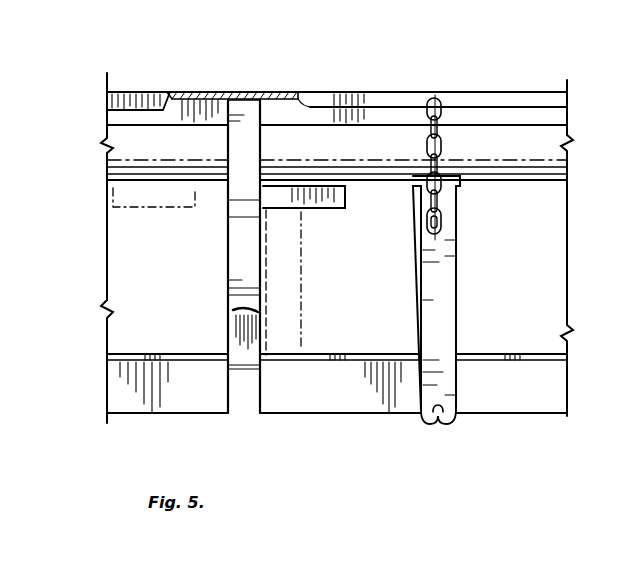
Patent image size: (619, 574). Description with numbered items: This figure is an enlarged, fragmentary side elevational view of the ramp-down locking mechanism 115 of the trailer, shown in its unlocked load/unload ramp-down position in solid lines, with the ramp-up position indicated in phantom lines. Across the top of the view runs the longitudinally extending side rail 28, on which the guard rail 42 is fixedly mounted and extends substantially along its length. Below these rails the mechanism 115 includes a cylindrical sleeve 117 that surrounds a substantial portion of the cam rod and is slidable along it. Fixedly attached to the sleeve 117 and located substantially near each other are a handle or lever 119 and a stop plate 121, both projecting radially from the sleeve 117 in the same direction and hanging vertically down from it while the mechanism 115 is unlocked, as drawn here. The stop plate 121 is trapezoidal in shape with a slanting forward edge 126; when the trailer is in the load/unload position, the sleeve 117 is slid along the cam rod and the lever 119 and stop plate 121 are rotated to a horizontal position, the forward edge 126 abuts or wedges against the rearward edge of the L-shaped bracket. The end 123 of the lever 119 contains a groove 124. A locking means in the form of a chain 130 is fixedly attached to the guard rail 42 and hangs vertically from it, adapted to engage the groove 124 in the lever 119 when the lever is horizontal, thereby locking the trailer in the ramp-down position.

The guard rail 42 is at (500, 88).
The ramp-down locking mechanism 115 is at (305, 78).
The side rail 28 is at (463, 118).
The cylindrical sleeve 117 is at (478, 181).
The stop plate 121 is at (322, 206).
The slanting forward edge 126 is at (262, 215).
The chain 130 is at (426, 150).
The lever 119 is at (443, 310).
The end of the lever 123 is at (423, 427).
The groove 124 is at (448, 427).